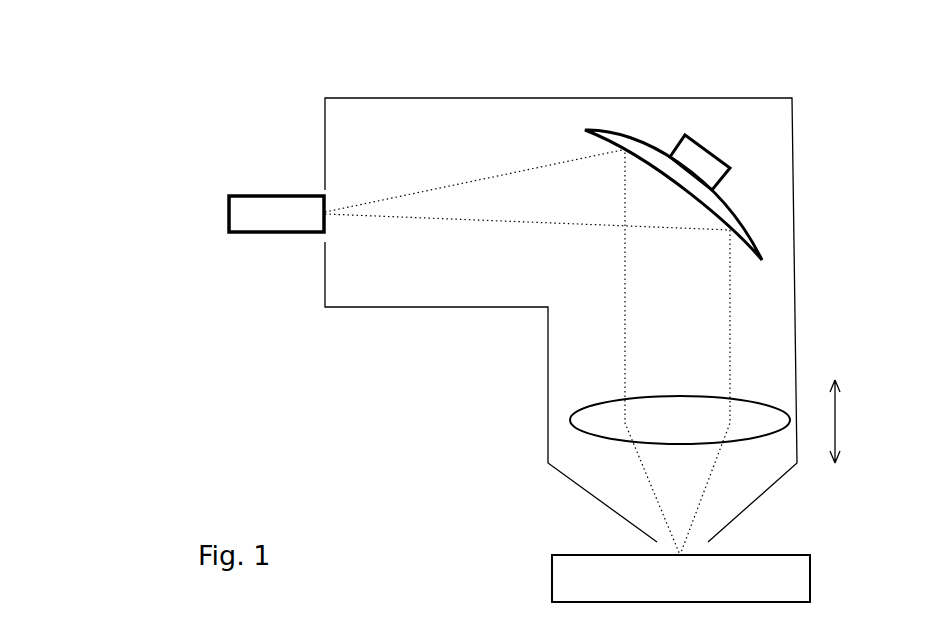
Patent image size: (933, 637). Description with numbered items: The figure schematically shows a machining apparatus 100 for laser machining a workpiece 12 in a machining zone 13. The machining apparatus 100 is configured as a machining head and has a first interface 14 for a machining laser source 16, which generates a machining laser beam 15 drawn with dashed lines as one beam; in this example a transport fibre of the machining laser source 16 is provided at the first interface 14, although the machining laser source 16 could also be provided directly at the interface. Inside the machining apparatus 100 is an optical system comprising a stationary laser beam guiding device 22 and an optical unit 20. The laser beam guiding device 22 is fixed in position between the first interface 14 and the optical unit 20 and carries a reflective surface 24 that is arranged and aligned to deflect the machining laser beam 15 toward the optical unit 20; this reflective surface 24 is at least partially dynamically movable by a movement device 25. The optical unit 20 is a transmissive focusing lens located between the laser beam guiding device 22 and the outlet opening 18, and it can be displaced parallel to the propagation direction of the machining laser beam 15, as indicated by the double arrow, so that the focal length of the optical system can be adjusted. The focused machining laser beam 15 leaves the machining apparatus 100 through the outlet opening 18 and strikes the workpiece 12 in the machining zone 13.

The machining apparatus 100 is at (157, 100).
The first interface 14 is at (317, 181).
The machining laser source 16 is at (258, 233).
The machining laser beam 15 is at (438, 205).
The laser beam guiding device 22 is at (753, 190).
The reflective surface 24 is at (672, 178).
The movement device 25 is at (705, 145).
The optical unit 20 is at (757, 400).
The outlet opening 18 is at (653, 542).
The machining zone 13 is at (713, 550).
The workpiece 12 is at (812, 577).